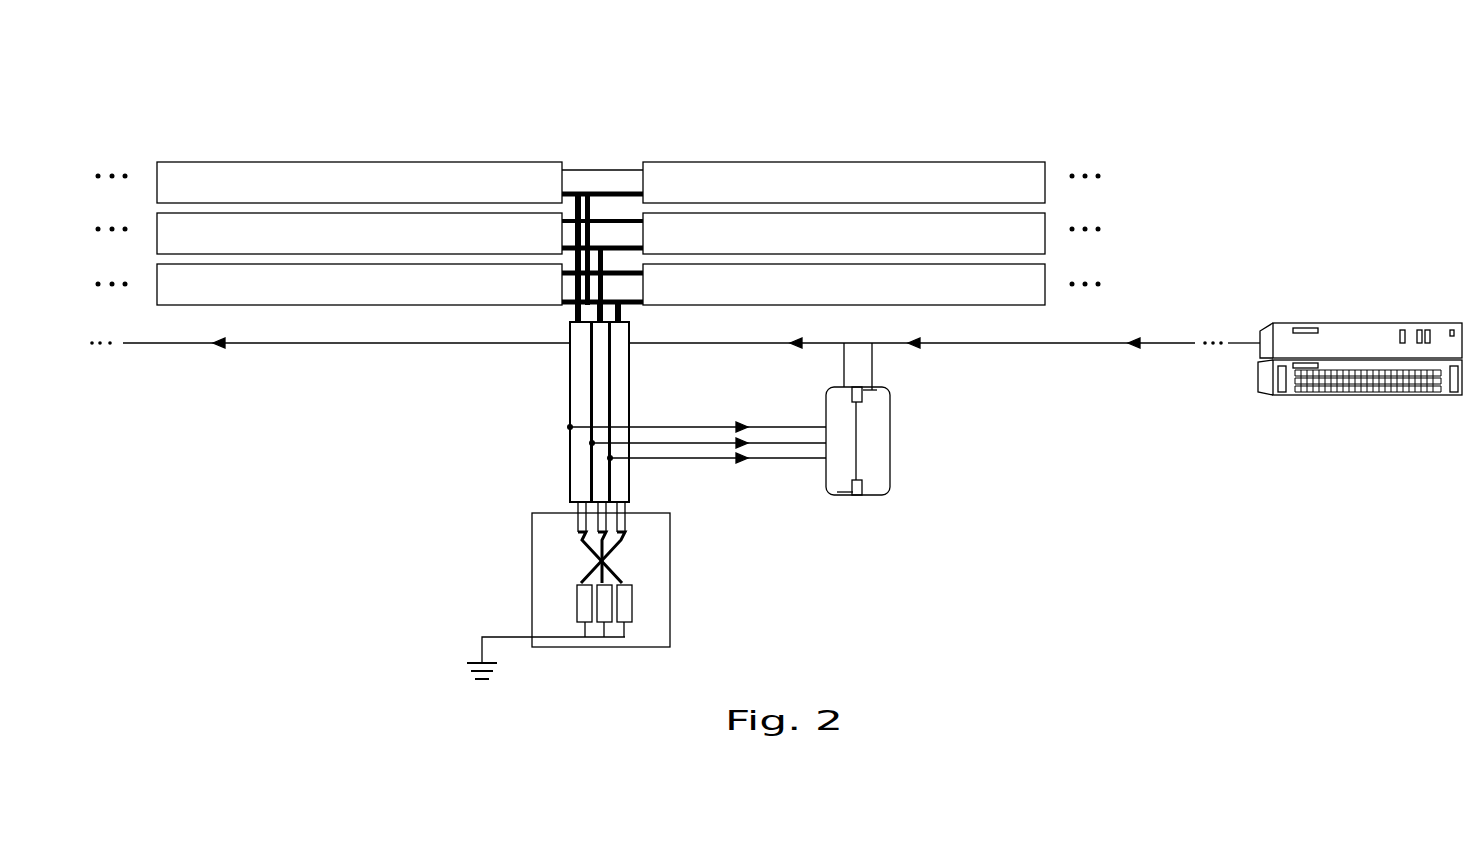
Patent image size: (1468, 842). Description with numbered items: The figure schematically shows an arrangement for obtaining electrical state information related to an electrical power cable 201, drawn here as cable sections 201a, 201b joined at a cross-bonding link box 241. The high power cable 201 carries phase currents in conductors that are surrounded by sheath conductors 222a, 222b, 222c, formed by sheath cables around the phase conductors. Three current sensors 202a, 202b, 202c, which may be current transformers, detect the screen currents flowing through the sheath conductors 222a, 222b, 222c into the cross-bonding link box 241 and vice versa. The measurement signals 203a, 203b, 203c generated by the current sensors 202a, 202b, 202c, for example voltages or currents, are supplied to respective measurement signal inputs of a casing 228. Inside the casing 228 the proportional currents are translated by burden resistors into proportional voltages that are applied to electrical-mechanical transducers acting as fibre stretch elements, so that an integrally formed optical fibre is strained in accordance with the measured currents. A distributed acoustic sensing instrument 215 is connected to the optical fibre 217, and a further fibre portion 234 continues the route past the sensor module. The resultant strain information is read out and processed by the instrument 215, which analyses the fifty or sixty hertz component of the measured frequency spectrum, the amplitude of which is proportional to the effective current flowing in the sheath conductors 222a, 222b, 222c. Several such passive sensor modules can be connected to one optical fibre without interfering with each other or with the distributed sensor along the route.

The electrical power cable 201 is at (1134, 132).
The rack row 201a is at (873, 138).
The rack row 201b is at (364, 138).
The sheath conductor 222a is at (576, 310).
The sheath conductor 222b is at (597, 312).
The sheath conductor 222c is at (620, 311).
The current sensor 202a is at (570, 427).
The current sensor 202b is at (592, 443).
The current sensor 202c is at (610, 458).
The measurement signal 203a is at (747, 426).
The measurement signal 203b is at (750, 445).
The measurement signal 203c is at (747, 460).
The casing 228 is at (897, 505).
The cross-bonding link box 241 is at (518, 553).
The output line 234 is at (300, 344).
The optical fibre 217 is at (1075, 344).
The distributed acoustic sensing instrument 215 is at (1352, 322).